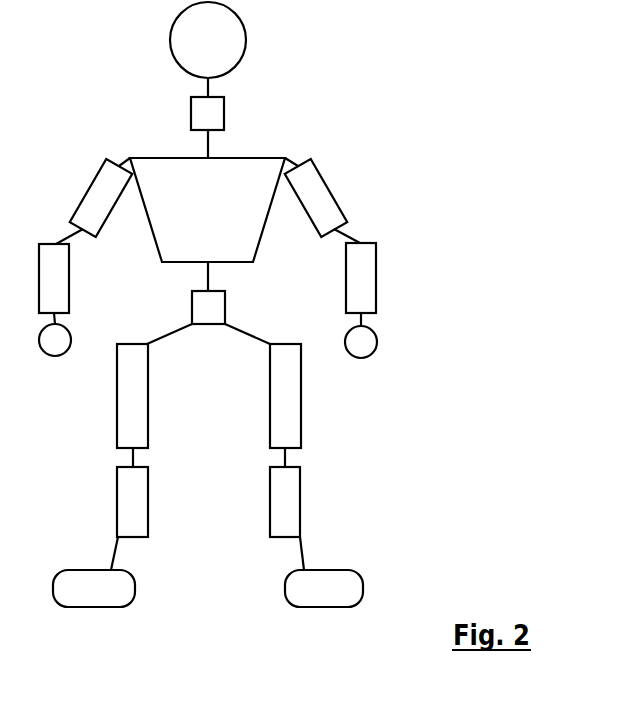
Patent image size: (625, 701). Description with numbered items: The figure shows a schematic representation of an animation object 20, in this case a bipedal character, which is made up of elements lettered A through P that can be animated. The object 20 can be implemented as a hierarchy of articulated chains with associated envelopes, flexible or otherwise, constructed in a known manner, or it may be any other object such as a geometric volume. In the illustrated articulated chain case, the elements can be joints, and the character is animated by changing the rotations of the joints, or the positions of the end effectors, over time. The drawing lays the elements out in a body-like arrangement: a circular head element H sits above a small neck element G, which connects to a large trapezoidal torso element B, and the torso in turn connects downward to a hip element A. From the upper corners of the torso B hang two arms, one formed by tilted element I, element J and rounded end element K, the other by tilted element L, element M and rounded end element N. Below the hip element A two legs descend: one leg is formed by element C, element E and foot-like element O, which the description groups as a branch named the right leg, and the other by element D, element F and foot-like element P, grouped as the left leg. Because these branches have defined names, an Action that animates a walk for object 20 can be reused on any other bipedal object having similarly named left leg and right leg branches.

The animation object 20 is at (268, 304).
The element H is at (208, 40).
The element G is at (207, 113).
The element B is at (207, 210).
The element A is at (208, 307).
The element I is at (101, 198).
The element J is at (54, 278).
The element K is at (55, 340).
The element L is at (316, 198).
The element M is at (361, 278).
The element N is at (361, 342).
The element C is at (132, 396).
The element E is at (132, 502).
The element O is at (94, 588).
The element D is at (285, 396).
The element F is at (285, 502).
The element P is at (324, 588).